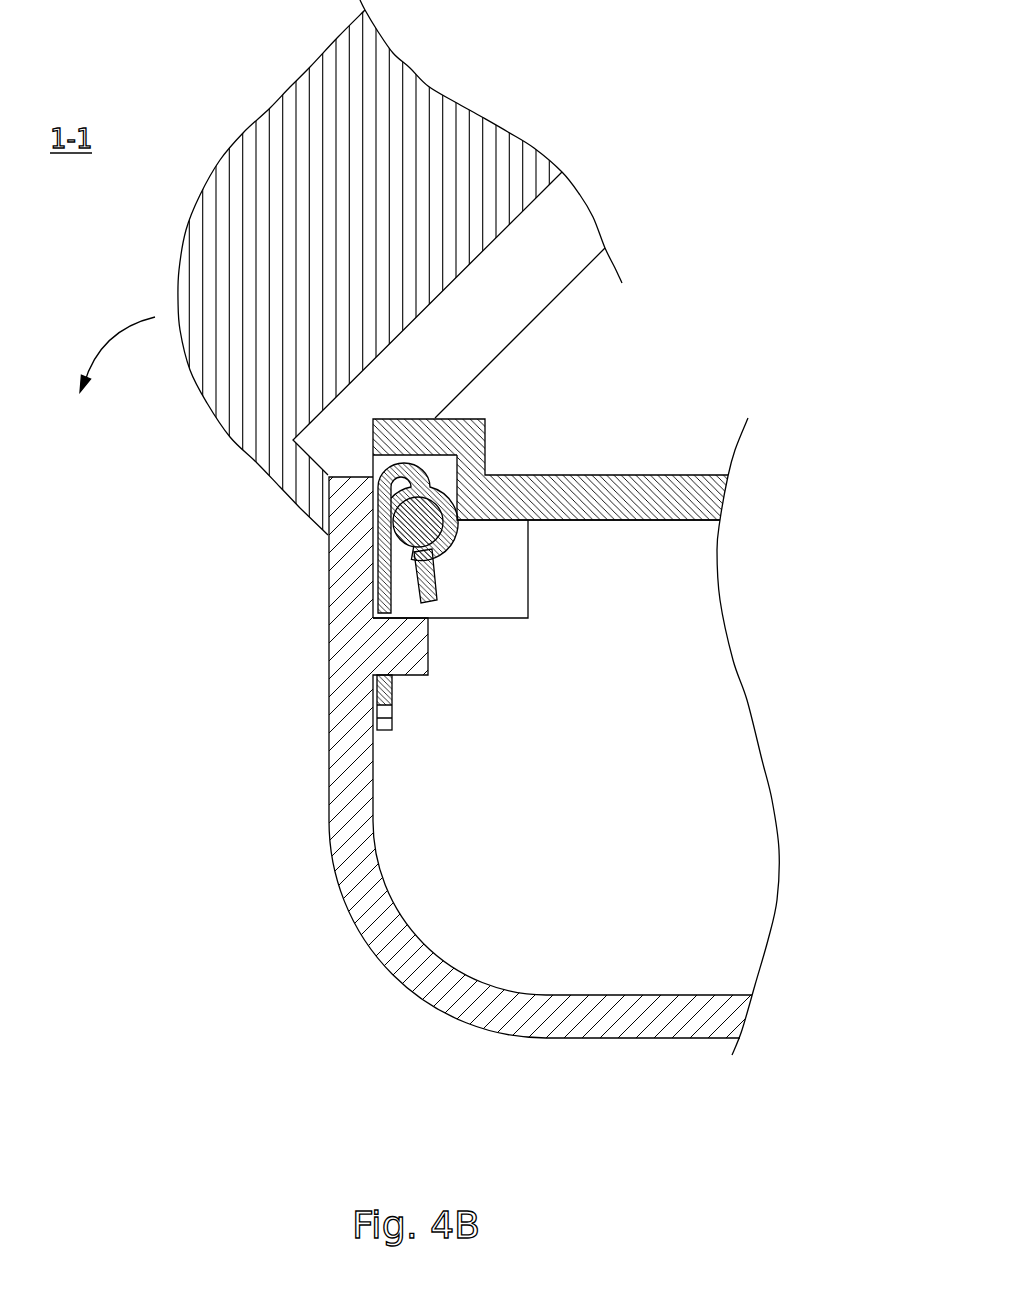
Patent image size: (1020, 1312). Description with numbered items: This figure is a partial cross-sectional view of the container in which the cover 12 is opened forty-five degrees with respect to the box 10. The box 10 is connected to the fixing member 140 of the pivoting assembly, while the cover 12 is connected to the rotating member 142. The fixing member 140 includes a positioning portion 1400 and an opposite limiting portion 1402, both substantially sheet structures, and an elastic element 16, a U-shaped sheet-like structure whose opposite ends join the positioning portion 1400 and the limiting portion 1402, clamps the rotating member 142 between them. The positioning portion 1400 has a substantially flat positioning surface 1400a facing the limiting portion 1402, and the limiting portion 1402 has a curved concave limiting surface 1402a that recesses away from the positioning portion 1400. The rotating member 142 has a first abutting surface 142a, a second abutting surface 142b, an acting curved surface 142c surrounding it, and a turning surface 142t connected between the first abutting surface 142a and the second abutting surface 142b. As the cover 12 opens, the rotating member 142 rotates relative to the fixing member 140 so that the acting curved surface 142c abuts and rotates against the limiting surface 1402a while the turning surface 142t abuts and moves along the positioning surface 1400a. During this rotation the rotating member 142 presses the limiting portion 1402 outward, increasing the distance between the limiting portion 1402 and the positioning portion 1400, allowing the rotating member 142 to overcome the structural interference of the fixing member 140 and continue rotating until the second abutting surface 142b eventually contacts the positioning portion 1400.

The box 10 is at (393, 957).
The cover 12 is at (280, 112).
The elastic element 16 is at (413, 472).
The fixing member 140 is at (463, 674).
The positioning portion 1400 is at (271, 649).
The positioning surface 1400a is at (386, 598).
The limiting portion 1402 is at (499, 695).
The limiting surface 1402a is at (440, 545).
The rotating member 142 is at (534, 570).
The first abutting surface 142a is at (386, 560).
The second abutting surface 142b is at (372, 478).
The acting curved surface 142c is at (437, 500).
The turning surface 142t is at (386, 520).